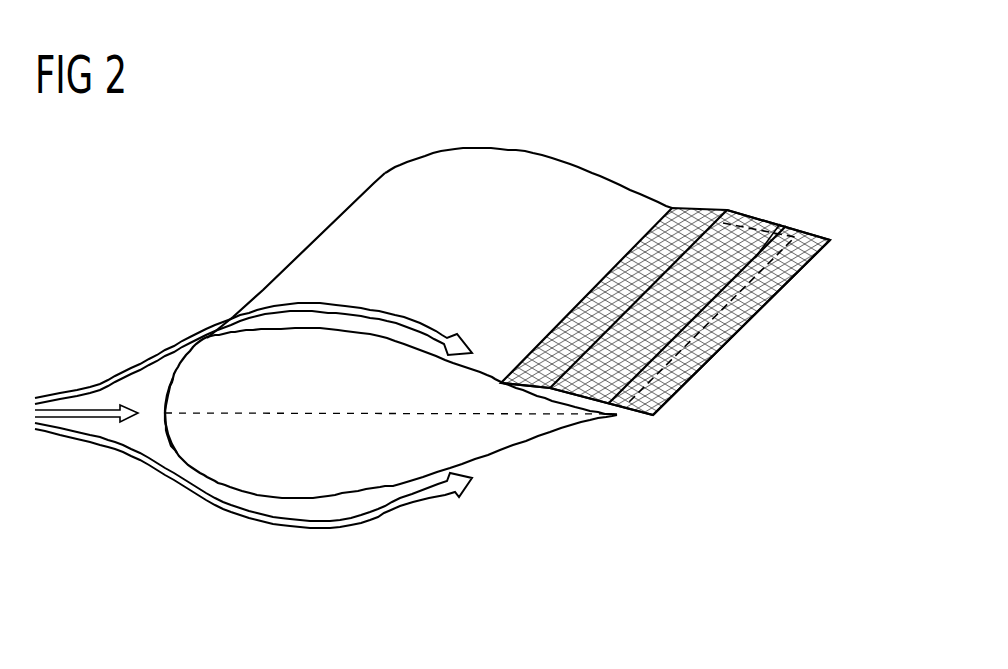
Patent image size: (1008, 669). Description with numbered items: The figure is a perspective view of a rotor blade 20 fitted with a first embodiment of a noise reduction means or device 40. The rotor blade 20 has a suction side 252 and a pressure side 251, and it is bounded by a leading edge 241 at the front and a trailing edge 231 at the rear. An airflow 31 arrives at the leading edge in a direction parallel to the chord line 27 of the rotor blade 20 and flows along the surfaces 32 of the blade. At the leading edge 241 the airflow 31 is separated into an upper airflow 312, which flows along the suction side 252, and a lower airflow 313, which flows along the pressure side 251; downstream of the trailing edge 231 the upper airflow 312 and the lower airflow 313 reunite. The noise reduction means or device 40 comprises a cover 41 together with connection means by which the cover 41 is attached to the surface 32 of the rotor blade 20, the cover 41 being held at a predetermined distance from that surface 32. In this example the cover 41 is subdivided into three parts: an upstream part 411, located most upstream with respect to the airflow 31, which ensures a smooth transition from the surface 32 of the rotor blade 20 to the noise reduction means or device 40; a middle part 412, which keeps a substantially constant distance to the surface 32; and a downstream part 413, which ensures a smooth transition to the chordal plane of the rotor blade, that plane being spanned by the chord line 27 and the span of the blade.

The rotor blade 20 is at (373, 320).
The chord line 27 is at (310, 414).
The airflow 31 is at (78, 417).
The upper airflow 312 is at (366, 316).
The lower airflow 313 is at (383, 511).
The surface 32 is at (615, 197).
The trailing edge 231 is at (715, 320).
The leading edge 241 is at (165, 418).
The pressure side 251 is at (313, 500).
The suction side 252 is at (547, 183).
The noise reduction means or device 40 is at (695, 266).
The cover 41 is at (757, 222).
The upstream part 411 is at (690, 220).
The middle part 412 is at (787, 223).
The downstream part 413 is at (774, 278).